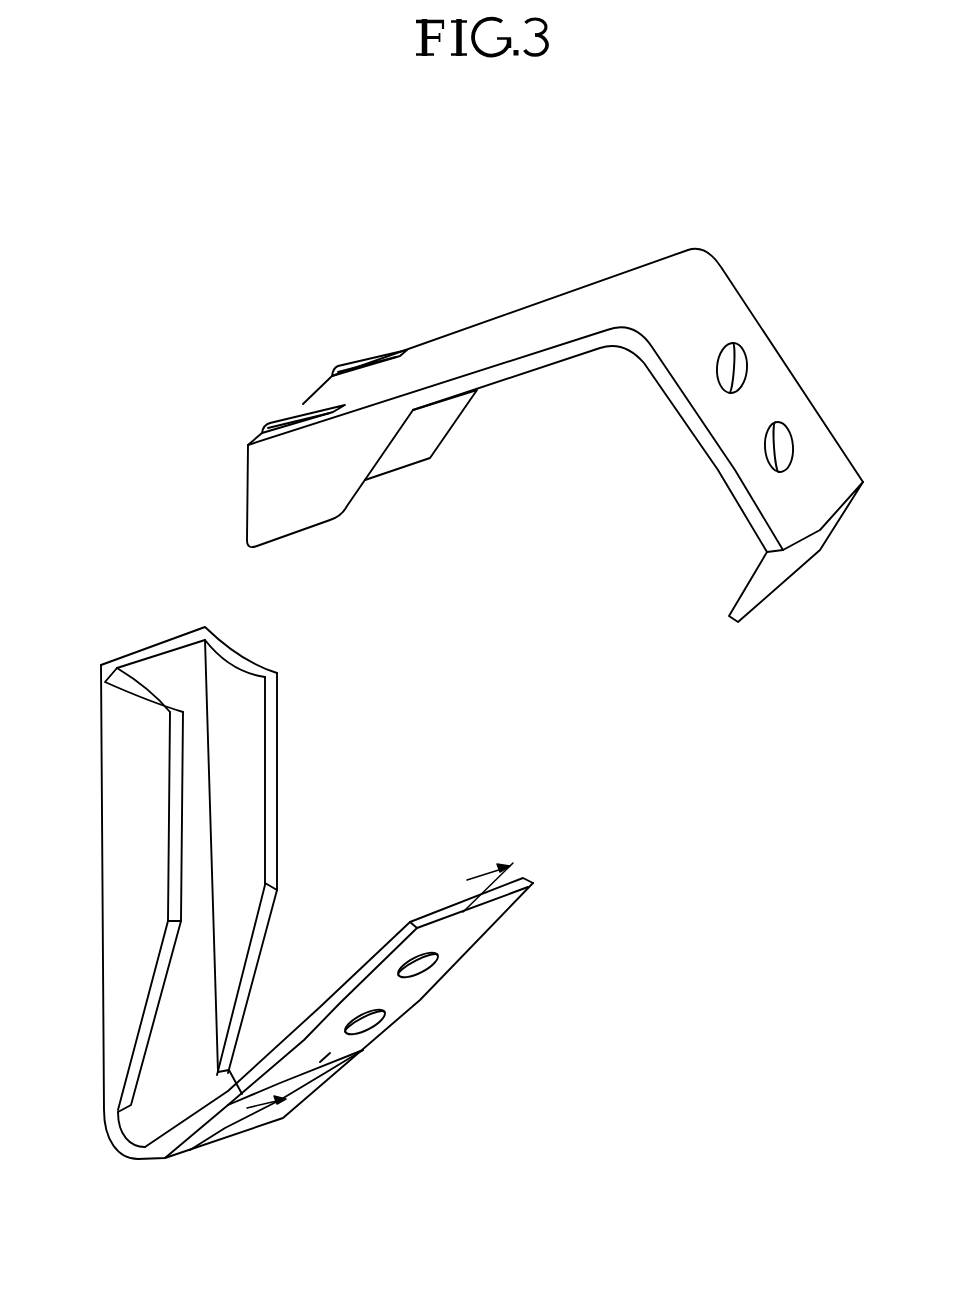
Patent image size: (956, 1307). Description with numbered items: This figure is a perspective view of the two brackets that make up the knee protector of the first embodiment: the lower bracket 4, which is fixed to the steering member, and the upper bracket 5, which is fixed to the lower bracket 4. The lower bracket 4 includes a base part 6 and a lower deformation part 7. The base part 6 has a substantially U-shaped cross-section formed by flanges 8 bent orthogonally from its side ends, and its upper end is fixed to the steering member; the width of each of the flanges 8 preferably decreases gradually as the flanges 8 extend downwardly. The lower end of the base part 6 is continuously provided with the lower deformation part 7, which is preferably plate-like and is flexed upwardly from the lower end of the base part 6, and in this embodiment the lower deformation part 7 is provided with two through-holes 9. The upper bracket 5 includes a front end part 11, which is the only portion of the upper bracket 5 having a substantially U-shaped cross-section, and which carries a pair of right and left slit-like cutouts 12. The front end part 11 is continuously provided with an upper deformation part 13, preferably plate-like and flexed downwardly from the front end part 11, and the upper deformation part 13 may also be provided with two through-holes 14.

The lower bracket 4 is at (284, 894).
The upper bracket 5 is at (520, 397).
The base part 6 is at (101, 986).
The lower deformation part 7 is at (343, 1077).
The flanges 8 is at (153, 770).
The through-holes 9 is at (430, 963).
The front end part 11 is at (262, 500).
The slit-like cutouts 12 is at (356, 363).
The upper deformation part 13 is at (703, 278).
The through-holes 14 is at (740, 354).